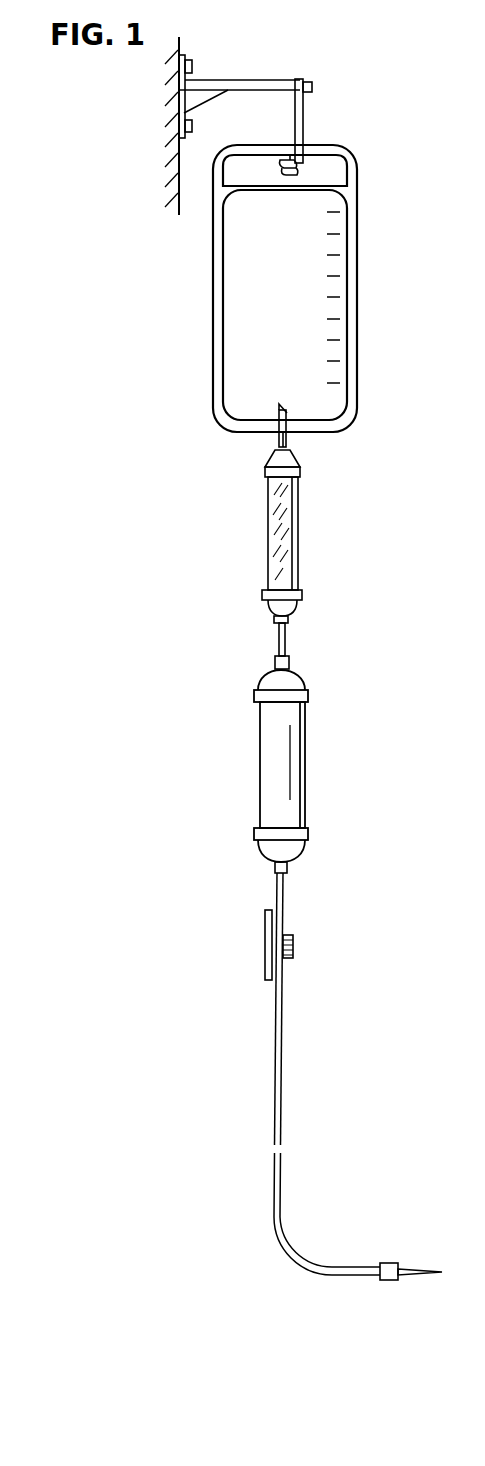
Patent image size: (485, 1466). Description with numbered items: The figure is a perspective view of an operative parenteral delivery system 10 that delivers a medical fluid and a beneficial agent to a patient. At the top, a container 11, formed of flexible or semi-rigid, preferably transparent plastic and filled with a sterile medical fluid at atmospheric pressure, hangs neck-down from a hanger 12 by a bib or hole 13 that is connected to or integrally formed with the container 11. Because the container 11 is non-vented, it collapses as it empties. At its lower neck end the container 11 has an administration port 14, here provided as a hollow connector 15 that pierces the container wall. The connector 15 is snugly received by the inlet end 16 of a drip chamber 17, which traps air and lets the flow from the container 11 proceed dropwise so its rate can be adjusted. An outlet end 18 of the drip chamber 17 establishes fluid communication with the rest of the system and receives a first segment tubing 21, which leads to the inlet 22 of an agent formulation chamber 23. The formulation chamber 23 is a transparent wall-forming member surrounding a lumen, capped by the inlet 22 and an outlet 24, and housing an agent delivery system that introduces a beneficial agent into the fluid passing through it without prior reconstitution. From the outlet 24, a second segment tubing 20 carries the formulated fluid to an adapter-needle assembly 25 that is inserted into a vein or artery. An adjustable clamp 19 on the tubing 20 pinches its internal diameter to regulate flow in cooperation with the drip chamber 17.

The parenteral delivery system 10 is at (297, 288).
The container 11 is at (213, 288).
The hanger 12 is at (284, 79).
The bib or hole 13 is at (300, 168).
The administration port 14 is at (279, 433).
The hollow connector 15 is at (291, 436).
The inlet end 16 is at (265, 470).
The drip chamber 17 is at (300, 530).
The outlet end 18 is at (262, 595).
The adjustable clamp 19 is at (278, 943).
The second segment tubing 20 is at (276, 1083).
The first segment tubing 21 is at (286, 641).
The inlet 22 is at (275, 663).
The agent formulation chamber 23 is at (303, 760).
The outlet 24 is at (275, 868).
The adapter-needle assembly 25 is at (396, 1263).